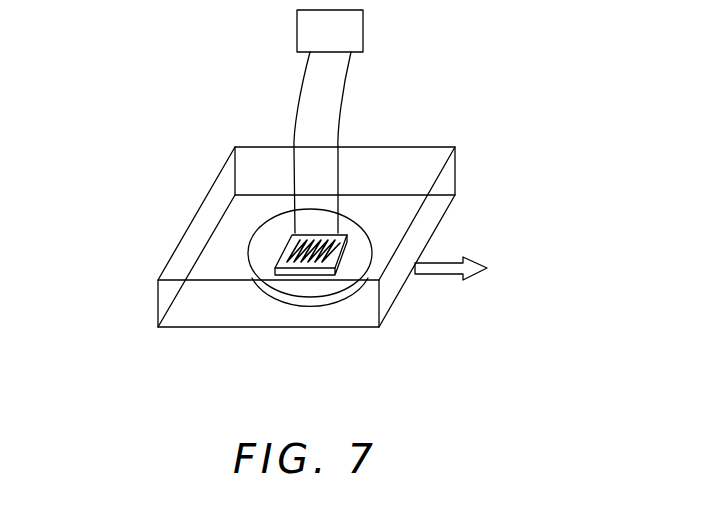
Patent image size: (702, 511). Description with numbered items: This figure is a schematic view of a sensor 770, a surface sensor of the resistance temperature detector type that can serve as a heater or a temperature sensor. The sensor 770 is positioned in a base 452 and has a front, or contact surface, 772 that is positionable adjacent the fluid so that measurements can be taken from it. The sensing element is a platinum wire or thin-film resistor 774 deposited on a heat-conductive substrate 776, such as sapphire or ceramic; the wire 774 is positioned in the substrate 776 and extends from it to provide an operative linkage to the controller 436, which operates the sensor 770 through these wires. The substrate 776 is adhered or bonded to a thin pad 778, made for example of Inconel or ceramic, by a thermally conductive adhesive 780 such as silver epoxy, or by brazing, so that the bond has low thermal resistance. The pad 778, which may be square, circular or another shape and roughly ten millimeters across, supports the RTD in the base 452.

The sensor 770 is at (227, 70).
The controller 436 is at (352, 42).
The base 452 is at (157, 305).
The front (contact surface) 772 is at (278, 225).
The wire 774 is at (345, 92).
The heat-conductive substrate 776 is at (345, 249).
The pad 778 is at (360, 233).
The thermally conductive adhesive 780 is at (290, 247).